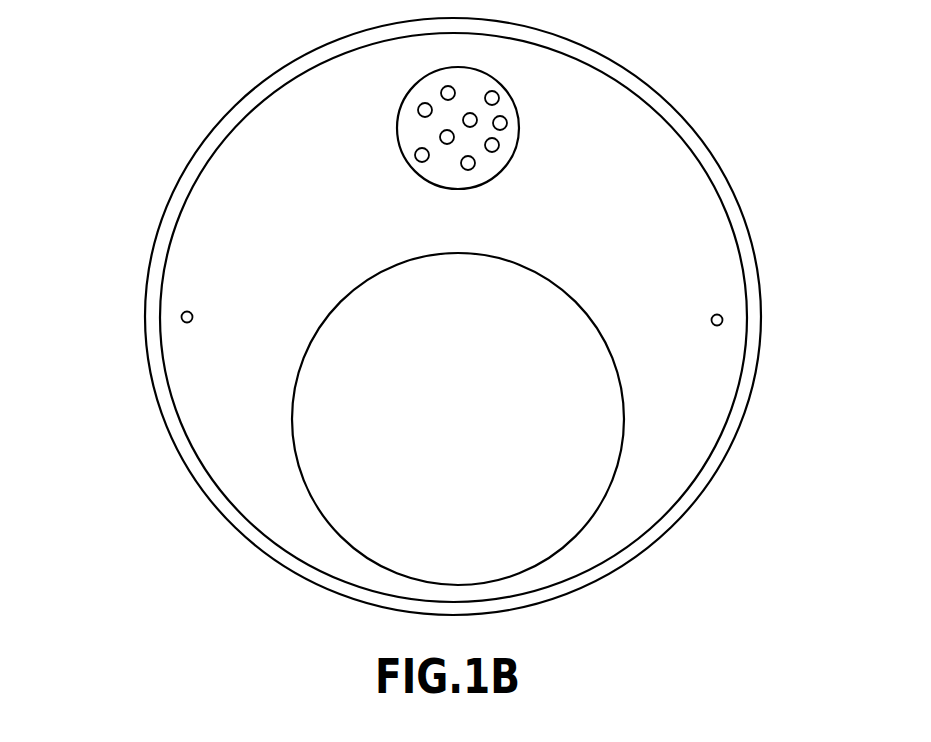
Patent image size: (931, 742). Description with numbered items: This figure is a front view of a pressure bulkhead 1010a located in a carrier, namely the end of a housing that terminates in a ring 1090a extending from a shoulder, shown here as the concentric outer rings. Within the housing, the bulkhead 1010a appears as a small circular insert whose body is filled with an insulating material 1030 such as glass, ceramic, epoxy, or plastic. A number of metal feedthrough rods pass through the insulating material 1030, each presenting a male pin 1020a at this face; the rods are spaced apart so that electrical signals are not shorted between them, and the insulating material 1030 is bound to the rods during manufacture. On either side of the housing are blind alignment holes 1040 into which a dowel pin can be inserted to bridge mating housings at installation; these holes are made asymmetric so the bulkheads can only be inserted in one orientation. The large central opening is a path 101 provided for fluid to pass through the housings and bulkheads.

The bulkhead 1010a is at (167, 80).
The ring 1090a is at (703, 157).
The path 101 is at (481, 438).
The insulating material 1030 is at (467, 78).
The male pin 1020a is at (500, 123).
The blind alignment holes 1040 is at (181, 317).